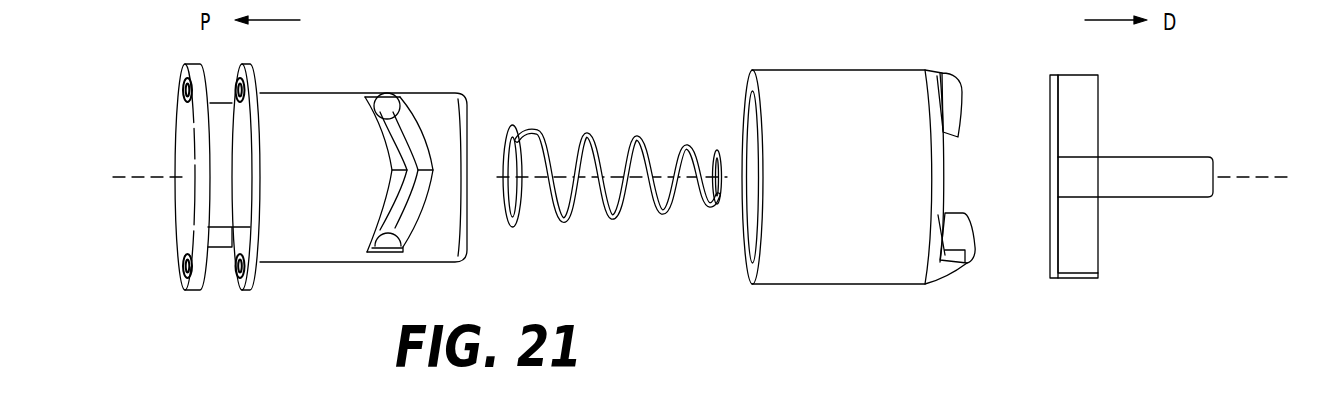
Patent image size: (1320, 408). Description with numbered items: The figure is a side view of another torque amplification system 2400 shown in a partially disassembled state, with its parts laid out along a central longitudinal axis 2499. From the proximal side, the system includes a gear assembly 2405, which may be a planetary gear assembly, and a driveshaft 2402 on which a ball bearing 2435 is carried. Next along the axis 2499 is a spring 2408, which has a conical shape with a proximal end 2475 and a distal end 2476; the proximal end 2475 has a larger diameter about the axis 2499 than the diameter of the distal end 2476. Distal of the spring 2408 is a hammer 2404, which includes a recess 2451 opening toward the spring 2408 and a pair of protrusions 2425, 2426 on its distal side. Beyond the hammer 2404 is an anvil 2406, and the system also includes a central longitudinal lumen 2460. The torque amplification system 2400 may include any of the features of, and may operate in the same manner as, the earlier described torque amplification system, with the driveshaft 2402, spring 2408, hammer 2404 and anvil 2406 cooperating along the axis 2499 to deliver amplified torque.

The torque amplification system 2400 is at (841, 175).
The driveshaft 2402 is at (366, 138).
The hammer 2404 is at (822, 85).
The gear assembly 2405 is at (200, 267).
The anvil 2406 is at (1131, 176).
The spring 2408 is at (612, 183).
The protrusion 2425 is at (958, 100).
The protrusion 2426 is at (964, 255).
The ball bearing 2435 is at (385, 100).
The recess 2451 is at (746, 208).
The central longitudinal lumen 2460 is at (1160, 173).
The proximal end 2475 is at (513, 230).
The distal end 2476 is at (708, 220).
The central longitudinal axis 2499 is at (130, 178).